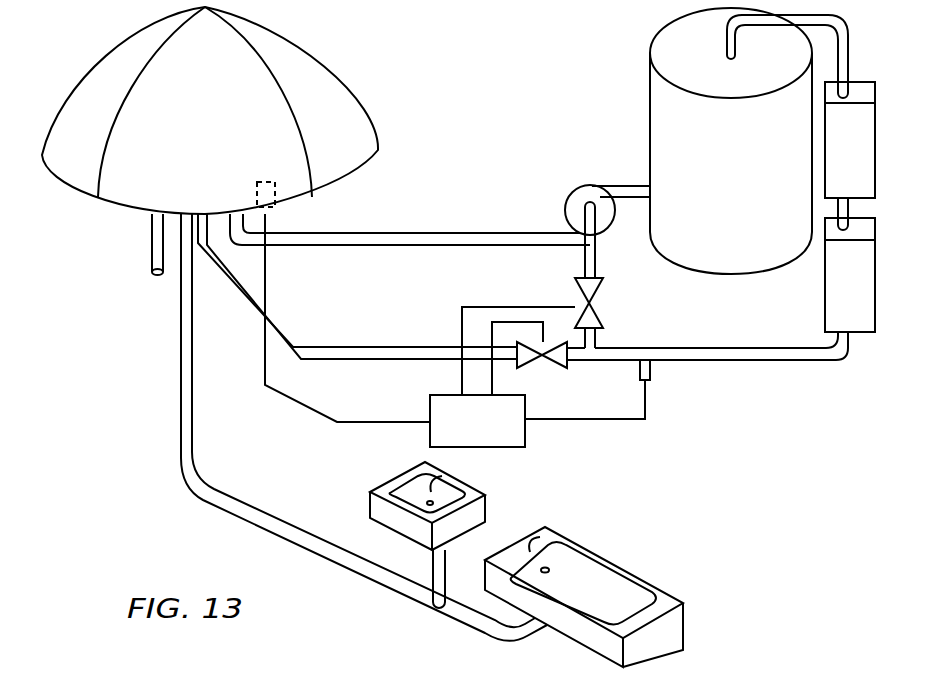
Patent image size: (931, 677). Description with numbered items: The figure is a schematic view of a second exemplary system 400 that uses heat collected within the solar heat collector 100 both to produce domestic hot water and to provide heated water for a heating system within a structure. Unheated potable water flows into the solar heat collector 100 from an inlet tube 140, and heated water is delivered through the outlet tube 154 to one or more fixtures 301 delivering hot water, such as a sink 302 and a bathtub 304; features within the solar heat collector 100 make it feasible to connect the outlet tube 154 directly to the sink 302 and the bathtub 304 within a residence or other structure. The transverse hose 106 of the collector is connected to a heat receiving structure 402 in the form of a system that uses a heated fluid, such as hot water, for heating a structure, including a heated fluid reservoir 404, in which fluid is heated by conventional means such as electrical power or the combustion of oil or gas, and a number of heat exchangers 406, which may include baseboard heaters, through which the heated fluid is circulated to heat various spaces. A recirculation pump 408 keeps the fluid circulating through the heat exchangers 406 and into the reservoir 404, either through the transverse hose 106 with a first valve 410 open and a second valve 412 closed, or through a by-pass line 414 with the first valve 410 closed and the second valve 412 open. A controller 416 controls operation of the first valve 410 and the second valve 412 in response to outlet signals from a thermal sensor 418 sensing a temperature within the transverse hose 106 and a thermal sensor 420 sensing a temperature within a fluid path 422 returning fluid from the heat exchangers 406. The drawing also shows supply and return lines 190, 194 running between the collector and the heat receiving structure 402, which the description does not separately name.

The solar heat collector 100 is at (292, 29).
The inlet tube 140 is at (150, 243).
The outlet tube 154 is at (178, 338).
The water supply line 190 is at (340, 347).
The transverse hose 106 is at (283, 250).
The return line 194 is at (373, 247).
The thermal sensor 418 is at (275, 192).
The second exemplary system 400 is at (130, 477).
The heat receiving structure 402 is at (594, 108).
The heated fluid reservoir 404 is at (650, 93).
The heat exchangers 406 is at (825, 287).
The recirculation pump 408 is at (577, 187).
The first valve 410 is at (533, 367).
The second valve 412 is at (603, 310).
The by-pass line 414 is at (580, 260).
The controller 416 is at (508, 447).
The thermal sensor 420 is at (652, 372).
The fluid path 422 is at (768, 362).
The sink 302 is at (370, 515).
The fixtures 301 is at (365, 622).
The bathtub 304 is at (638, 577).